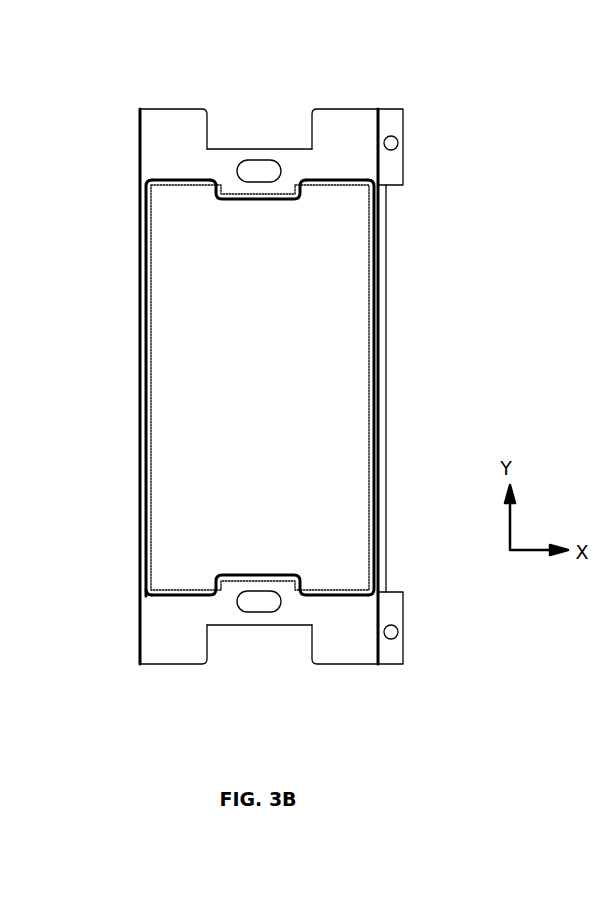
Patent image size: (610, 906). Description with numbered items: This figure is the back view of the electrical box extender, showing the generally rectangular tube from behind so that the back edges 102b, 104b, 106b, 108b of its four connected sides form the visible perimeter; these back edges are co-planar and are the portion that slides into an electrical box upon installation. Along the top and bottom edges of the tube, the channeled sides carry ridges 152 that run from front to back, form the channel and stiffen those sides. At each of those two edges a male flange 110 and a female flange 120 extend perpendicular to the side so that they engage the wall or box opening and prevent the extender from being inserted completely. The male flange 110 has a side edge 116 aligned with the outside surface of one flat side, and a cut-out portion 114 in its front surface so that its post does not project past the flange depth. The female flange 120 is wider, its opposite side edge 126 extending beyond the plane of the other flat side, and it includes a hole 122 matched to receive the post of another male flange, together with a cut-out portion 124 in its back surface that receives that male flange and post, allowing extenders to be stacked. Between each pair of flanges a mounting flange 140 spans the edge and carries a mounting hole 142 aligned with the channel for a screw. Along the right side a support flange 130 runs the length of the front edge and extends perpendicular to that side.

The back edge of side 102 102b is at (146, 386).
The back edge of side 104 104b is at (374, 392).
The back edge of side 106 106b is at (187, 187).
The back edge of side 108 108b is at (185, 580).
The male flange 110 is at (172, 118).
The cut-out portion of male flange front surface 114 is at (143, 603).
The side edge of male flange 116 is at (133, 161).
The female flange 120 is at (335, 120).
The hole 122 is at (398, 141).
The cut-out portion of female flange back surface 124 is at (404, 120).
The opposite side edge of female flange 126 is at (409, 166).
The support flange 130 is at (386, 302).
The mounting flange 140 is at (229, 160).
The mounting hole 142 is at (281, 158).
The ridge 152 is at (306, 200).